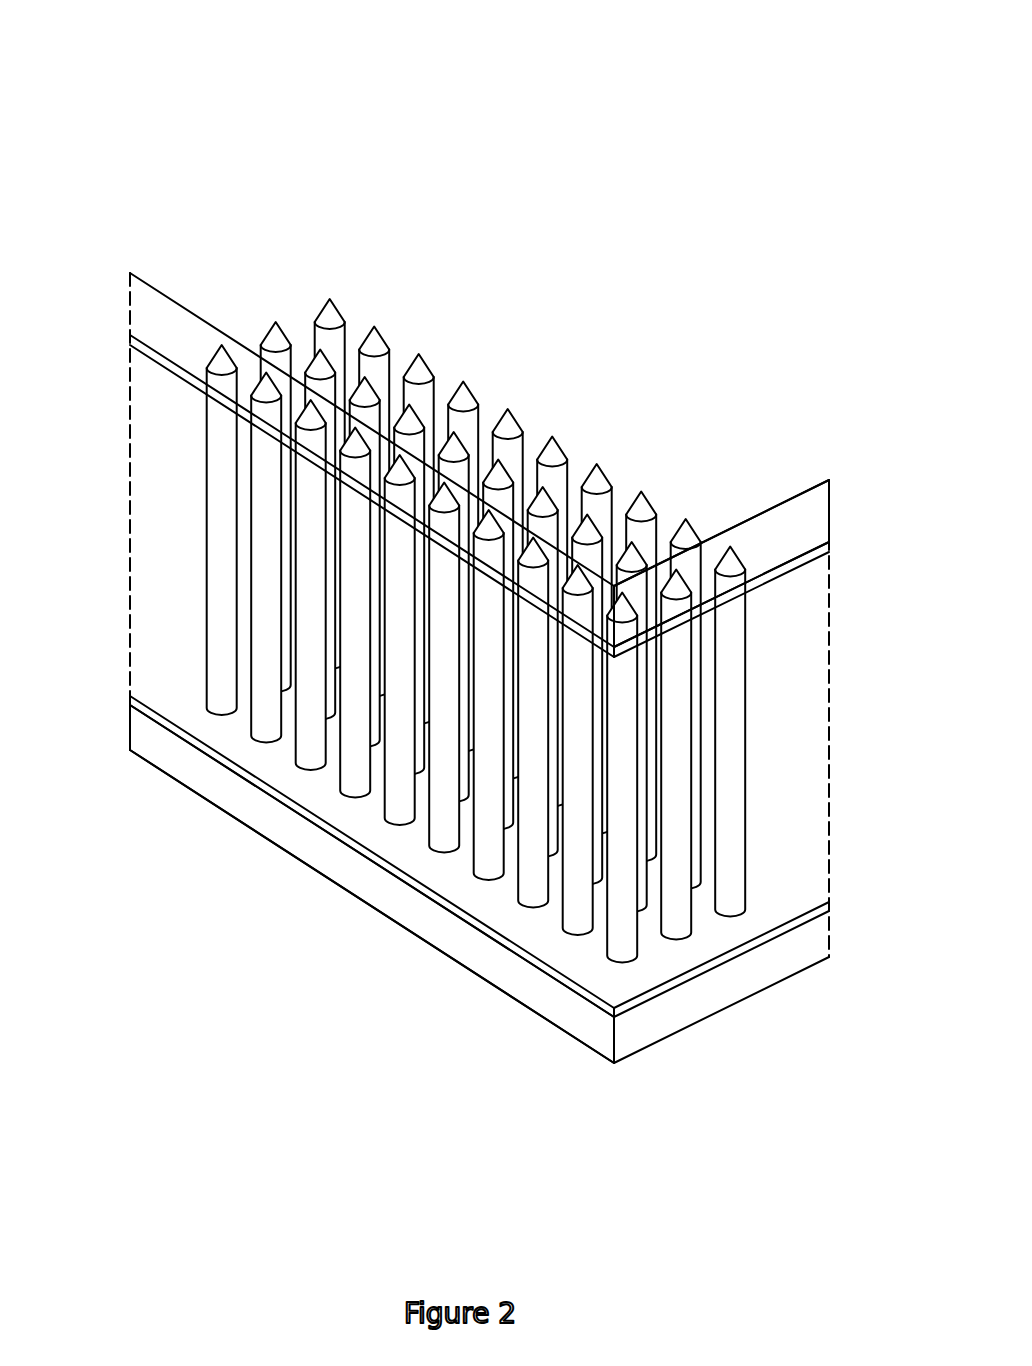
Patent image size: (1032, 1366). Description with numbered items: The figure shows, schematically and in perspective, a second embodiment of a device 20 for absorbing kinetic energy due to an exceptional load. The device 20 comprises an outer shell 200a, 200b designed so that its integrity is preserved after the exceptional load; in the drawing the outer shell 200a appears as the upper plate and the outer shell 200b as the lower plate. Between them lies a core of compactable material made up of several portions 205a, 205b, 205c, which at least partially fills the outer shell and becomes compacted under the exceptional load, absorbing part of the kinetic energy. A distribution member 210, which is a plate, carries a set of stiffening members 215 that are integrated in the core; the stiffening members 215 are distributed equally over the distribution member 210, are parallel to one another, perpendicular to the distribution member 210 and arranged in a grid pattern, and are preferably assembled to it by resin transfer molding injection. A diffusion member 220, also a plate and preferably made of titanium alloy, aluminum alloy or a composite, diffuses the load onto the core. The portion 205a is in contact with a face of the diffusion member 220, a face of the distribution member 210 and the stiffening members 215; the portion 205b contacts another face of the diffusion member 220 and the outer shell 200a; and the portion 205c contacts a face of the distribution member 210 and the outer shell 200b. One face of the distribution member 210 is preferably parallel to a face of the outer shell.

The device for absorbing kinetic energy 20 is at (515, 118).
The outer shell 200a is at (142, 273).
The outer shell 200b is at (253, 832).
The core portion 205a is at (818, 745).
The core portion 205b is at (803, 513).
The core portion 205c is at (183, 763).
The distribution member 210 is at (147, 700).
The stiffening member 215 is at (597, 503).
The diffusion member 220 is at (142, 350).